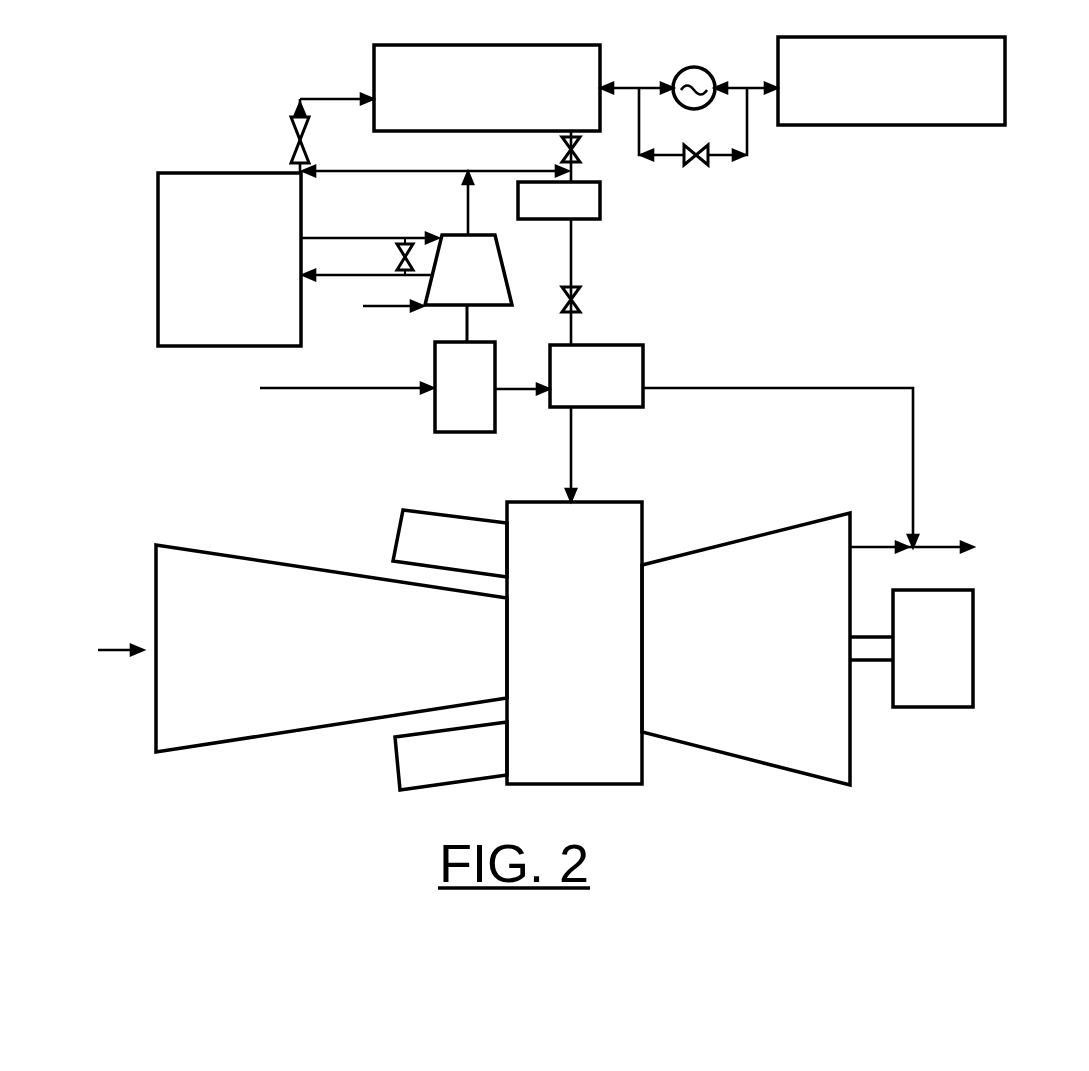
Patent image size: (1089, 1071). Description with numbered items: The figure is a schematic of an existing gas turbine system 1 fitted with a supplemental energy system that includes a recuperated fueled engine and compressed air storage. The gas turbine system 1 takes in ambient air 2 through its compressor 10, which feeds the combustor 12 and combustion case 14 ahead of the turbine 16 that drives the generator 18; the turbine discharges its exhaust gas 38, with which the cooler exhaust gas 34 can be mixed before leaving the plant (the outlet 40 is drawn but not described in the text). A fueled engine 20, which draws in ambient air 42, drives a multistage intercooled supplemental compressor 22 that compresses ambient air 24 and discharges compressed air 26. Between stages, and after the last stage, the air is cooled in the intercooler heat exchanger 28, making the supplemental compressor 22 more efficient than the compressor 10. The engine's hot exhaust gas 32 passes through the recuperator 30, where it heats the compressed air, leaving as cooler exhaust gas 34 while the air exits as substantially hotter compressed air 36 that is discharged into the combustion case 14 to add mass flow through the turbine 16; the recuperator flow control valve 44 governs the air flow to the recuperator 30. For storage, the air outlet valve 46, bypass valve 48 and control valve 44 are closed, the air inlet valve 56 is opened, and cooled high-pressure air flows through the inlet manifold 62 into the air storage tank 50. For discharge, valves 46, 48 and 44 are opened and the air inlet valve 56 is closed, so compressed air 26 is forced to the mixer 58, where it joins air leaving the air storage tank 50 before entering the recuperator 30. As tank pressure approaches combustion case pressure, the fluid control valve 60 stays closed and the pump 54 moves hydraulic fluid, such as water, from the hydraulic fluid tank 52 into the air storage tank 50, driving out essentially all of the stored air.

The gas turbine system 1 is at (178, 494).
The ambient air 2 is at (112, 650).
The compressor 10 is at (261, 549).
The combustor 12 is at (460, 507).
The combustion case 14 is at (540, 493).
The turbine 16 is at (745, 527).
The generator 18 is at (937, 718).
The fueled engine 20 is at (425, 429).
The supplemental compressor 22 is at (513, 253).
The ambient air 24 is at (370, 318).
The compressed air 26 is at (452, 198).
The intercooler heat exchanger 28 is at (179, 164).
The recuperator 30 is at (654, 341).
The exhaust gas 32 is at (512, 376).
The cooler exhaust gas 34 is at (810, 374).
The hotter compressed air 36 is at (586, 457).
The exhaust gas 38 is at (880, 532).
The exhaust outlet 40 is at (946, 532).
The ambient air 42 is at (301, 401).
The recuperator flow control valve 44 is at (596, 287).
The air exit valve 46 is at (592, 154).
The air bypass valve 48 is at (382, 249).
The air storage tank 50 is at (368, 75).
The hydraulic fluid tank 52 is at (894, 134).
The pump 54 is at (707, 73).
The air inlet valve 56 is at (282, 139).
The mixer 58 is at (610, 212).
The fluid control valve 60 is at (708, 176).
The inlet manifold 62 is at (342, 109).